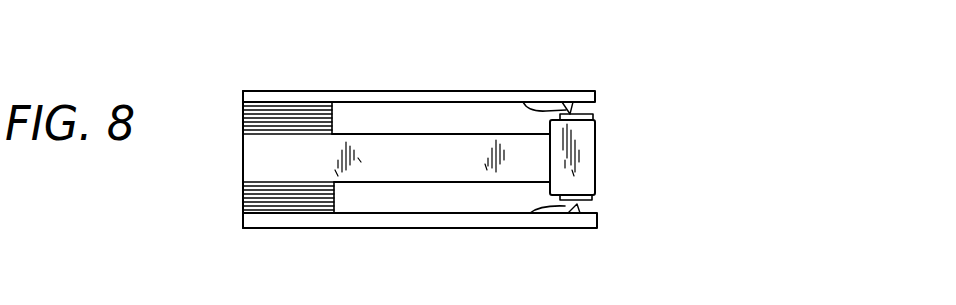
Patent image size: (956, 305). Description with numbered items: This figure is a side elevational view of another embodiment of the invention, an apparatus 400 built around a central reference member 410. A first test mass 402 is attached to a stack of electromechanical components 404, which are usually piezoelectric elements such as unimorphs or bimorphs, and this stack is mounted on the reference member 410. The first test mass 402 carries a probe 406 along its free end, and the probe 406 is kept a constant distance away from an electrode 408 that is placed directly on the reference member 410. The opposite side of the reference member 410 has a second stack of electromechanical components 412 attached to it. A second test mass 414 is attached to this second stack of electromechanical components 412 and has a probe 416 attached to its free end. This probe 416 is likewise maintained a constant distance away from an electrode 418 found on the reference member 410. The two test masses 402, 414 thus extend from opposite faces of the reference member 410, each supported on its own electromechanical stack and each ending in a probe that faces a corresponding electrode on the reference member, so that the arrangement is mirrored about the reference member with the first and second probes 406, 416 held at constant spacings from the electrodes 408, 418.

The apparatus 400 is at (662, 147).
The first test mass 402 is at (367, 91).
The stack of electromechanical components 404 is at (245, 111).
The probe 406 is at (524, 91).
The electrode 408 is at (572, 118).
The reference member 410 is at (435, 160).
The stack of electromechanical components 412 is at (245, 197).
The second test mass 414 is at (462, 228).
The probe 416 is at (562, 208).
The electrode 418 is at (594, 197).